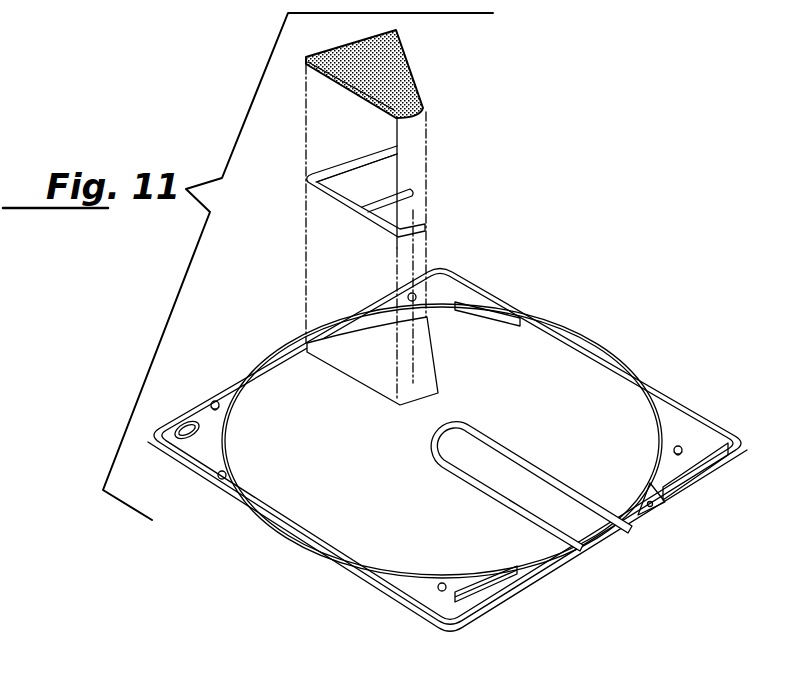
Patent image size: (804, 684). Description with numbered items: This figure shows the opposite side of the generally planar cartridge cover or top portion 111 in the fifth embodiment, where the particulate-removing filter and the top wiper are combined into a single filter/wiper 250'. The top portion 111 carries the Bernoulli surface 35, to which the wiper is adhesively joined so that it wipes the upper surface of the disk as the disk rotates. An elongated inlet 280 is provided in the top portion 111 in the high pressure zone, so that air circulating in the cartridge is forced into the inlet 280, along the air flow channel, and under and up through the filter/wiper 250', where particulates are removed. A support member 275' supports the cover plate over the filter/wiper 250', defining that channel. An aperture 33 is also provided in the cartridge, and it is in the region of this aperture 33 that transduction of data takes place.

The filter/wiper 250' is at (403, 74).
The support member 275' is at (366, 214).
The elongated inlet 280 is at (440, 355).
The Bernoulli surface 35 is at (363, 477).
The cartridge top portion 111 is at (297, 542).
The aperture 33 is at (600, 532).